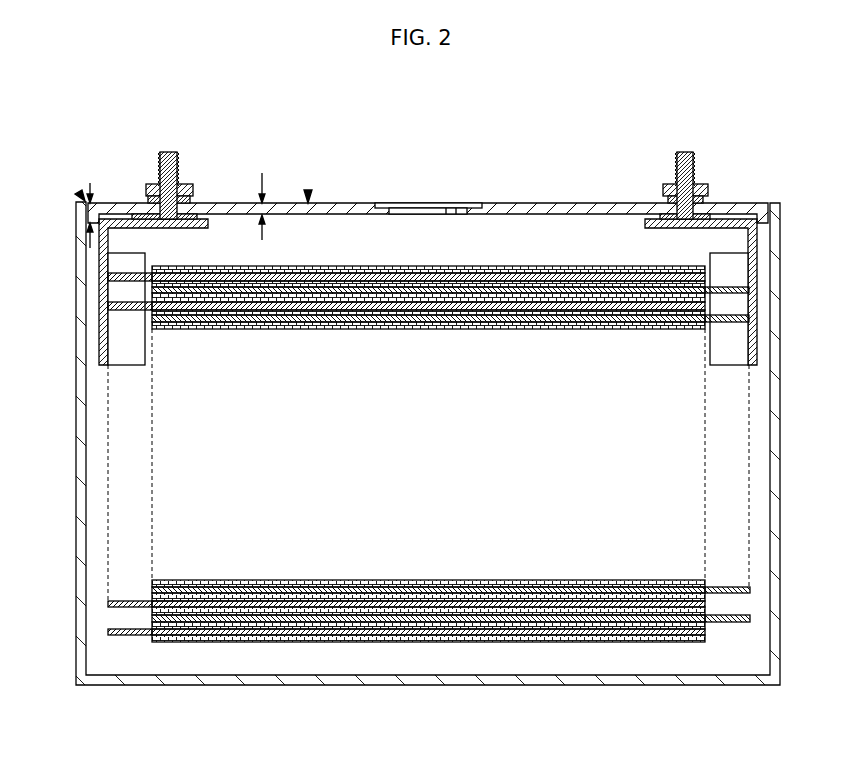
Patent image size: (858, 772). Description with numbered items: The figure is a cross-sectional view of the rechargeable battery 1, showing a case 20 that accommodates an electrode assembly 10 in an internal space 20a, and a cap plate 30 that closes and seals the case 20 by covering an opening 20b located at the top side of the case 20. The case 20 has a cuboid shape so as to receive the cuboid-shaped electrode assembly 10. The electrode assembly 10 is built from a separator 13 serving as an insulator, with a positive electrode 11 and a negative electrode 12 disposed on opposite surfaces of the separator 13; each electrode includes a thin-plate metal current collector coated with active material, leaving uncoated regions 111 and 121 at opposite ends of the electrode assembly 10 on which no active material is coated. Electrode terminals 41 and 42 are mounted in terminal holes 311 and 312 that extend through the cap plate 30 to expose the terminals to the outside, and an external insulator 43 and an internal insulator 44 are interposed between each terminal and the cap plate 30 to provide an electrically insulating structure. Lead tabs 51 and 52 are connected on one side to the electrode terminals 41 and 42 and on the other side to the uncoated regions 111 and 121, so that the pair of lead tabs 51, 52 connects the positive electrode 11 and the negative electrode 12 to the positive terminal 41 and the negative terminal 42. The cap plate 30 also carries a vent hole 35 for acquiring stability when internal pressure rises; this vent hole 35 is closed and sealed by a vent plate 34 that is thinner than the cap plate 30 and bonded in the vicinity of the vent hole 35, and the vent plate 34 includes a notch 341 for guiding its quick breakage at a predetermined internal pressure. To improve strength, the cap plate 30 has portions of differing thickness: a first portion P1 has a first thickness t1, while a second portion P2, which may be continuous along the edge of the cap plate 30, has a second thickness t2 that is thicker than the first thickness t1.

The rechargeable battery 1 is at (380, 94).
The electrode assembly 10 is at (429, 500).
The positive electrode 11 is at (250, 630).
The uncoated region 111 is at (130, 634).
The negative electrode 12 is at (316, 620).
The uncoated region 121 is at (727, 622).
The separator 13 is at (432, 612).
The case 20 is at (444, 431).
The internal space 20a is at (657, 660).
The opening 20b is at (770, 207).
The cap plate 30 is at (522, 208).
The terminal hole 311 is at (186, 190).
The terminal hole 312 is at (668, 187).
The vent plate 34 is at (380, 203).
The notch 341 is at (450, 212).
The vent hole 35 is at (424, 208).
The electrode terminal 41 is at (166, 152).
The electrode terminal 42 is at (684, 152).
The external insulator 43 is at (147, 198).
The internal insulator 44 is at (143, 217).
The lead tab 51 is at (92, 261).
The lead tab 52 is at (770, 281).
The first portion P1 is at (308, 192).
The second portion P2 is at (79, 193).
The first thickness t1 is at (265, 194).
The second thickness t2 is at (88, 214).